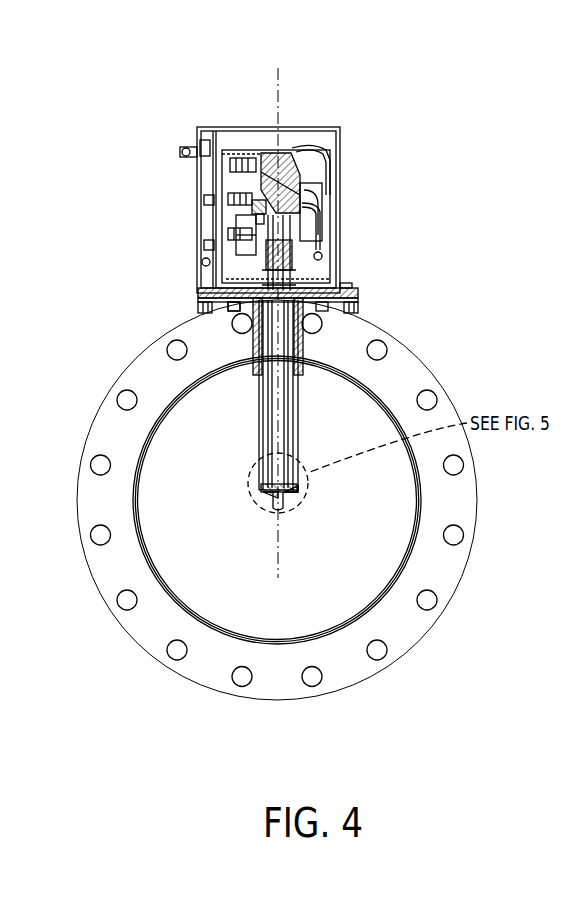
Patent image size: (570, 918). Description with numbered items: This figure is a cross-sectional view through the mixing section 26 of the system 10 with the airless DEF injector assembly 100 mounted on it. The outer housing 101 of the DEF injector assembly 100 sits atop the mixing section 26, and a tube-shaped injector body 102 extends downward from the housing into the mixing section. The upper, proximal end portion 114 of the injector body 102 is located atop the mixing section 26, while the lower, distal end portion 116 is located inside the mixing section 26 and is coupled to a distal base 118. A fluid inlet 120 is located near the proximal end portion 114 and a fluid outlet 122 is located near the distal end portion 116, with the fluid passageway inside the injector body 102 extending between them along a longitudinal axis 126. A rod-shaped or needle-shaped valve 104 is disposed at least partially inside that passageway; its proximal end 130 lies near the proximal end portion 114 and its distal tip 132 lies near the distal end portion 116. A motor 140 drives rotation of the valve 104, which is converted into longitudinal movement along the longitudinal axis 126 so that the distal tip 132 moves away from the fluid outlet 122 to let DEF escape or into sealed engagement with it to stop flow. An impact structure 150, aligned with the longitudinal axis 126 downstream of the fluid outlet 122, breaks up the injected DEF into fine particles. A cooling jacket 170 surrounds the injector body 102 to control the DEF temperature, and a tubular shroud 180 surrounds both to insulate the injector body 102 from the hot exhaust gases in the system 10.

The system 10 is at (110, 712).
The mixing section 26 is at (353, 588).
The DEF injector assembly 100 is at (141, 100).
The outer housing 101 is at (318, 126).
The injector body 102 is at (287, 315).
The valve 104 is at (277, 258).
The proximal end portion 114 is at (233, 309).
The proximal end 130 is at (233, 309).
The distal end portion 116 is at (305, 488).
The distal tip 132 is at (305, 488).
The distal base 118 is at (259, 490).
The fluid inlet 120 is at (258, 207).
The fluid outlet 122 is at (271, 496).
The longitudinal axis 126 is at (287, 67).
The motor 140 is at (283, 195).
The impact structure 150 is at (277, 498).
The cooling jacket 170 is at (297, 371).
The shroud 180 is at (300, 433).